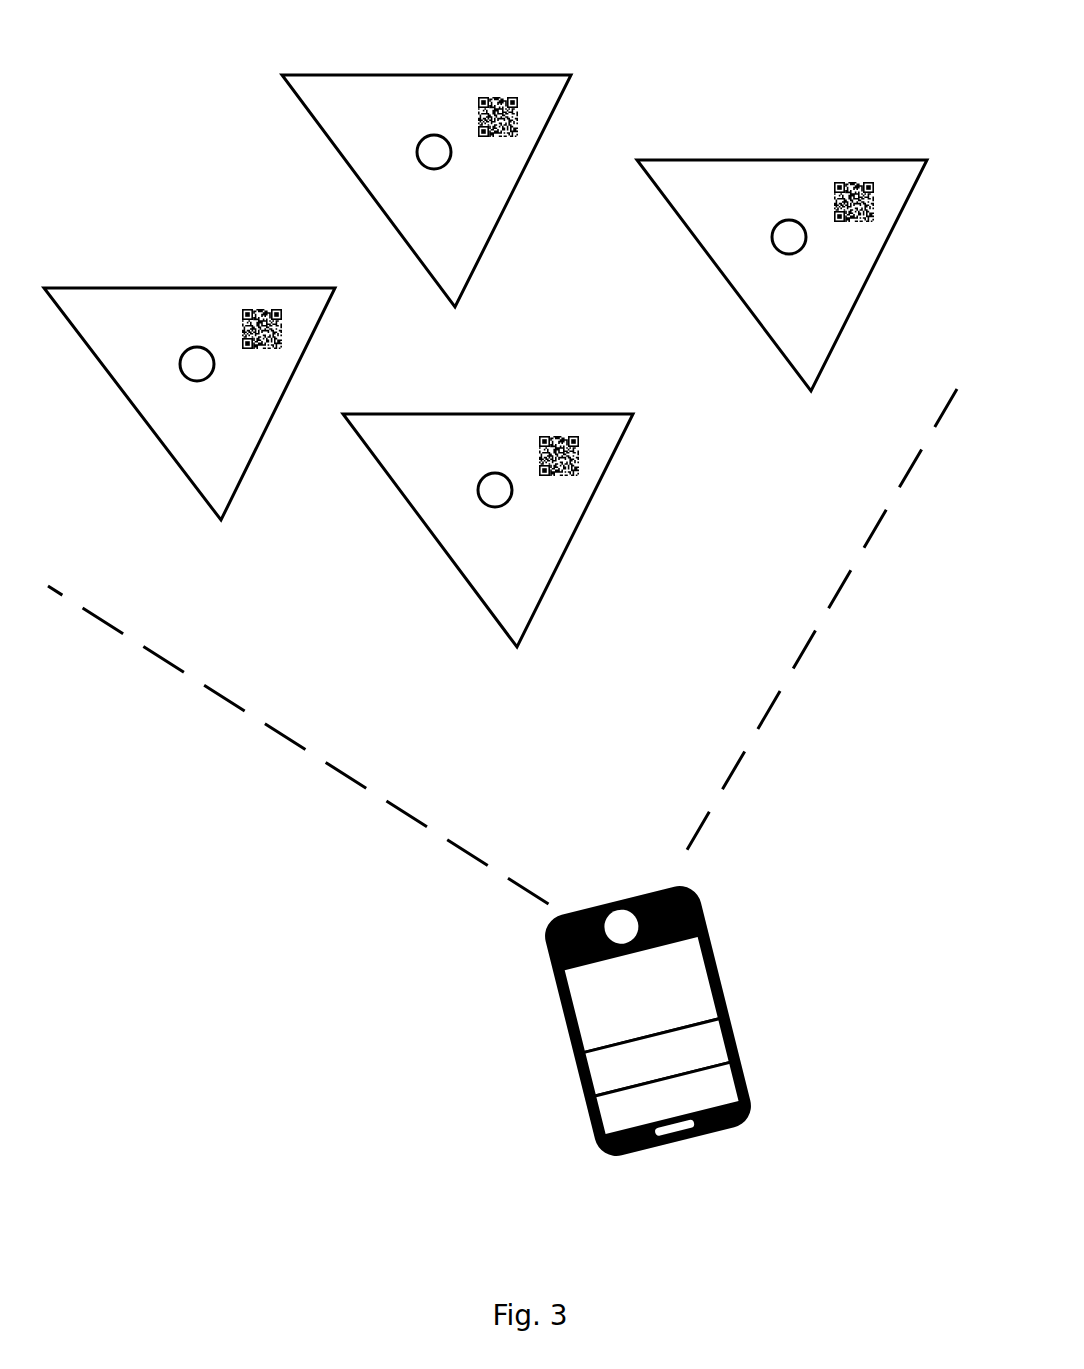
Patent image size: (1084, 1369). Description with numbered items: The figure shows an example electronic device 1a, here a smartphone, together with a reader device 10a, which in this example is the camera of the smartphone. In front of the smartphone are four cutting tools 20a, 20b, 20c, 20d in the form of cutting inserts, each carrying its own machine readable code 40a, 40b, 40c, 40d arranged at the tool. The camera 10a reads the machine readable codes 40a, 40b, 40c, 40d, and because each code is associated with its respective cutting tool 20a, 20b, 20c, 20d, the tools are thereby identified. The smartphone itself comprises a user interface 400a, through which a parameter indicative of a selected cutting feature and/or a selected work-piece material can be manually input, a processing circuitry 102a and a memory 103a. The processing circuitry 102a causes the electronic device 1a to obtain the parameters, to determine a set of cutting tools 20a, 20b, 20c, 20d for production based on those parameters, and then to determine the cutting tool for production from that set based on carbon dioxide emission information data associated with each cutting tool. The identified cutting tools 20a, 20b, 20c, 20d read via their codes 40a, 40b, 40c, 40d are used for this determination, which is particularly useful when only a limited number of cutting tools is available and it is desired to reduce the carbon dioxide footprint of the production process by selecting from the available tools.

The electronic device 1a is at (502, 775).
The reader device 10a is at (639, 968).
The cutting tool 20a is at (189, 383).
The cutting tool 20b is at (382, 155).
The cutting tool 20c is at (782, 239).
The cutting tool 20d is at (488, 494).
The machine readable code 40a is at (272, 310).
The machine readable code 40b is at (507, 96).
The machine readable code 40c is at (864, 183).
The machine readable code 40d is at (569, 437).
The user interface 400a is at (641, 993).
The processing circuitry 102a is at (657, 1058).
The memory 103a is at (668, 1099).